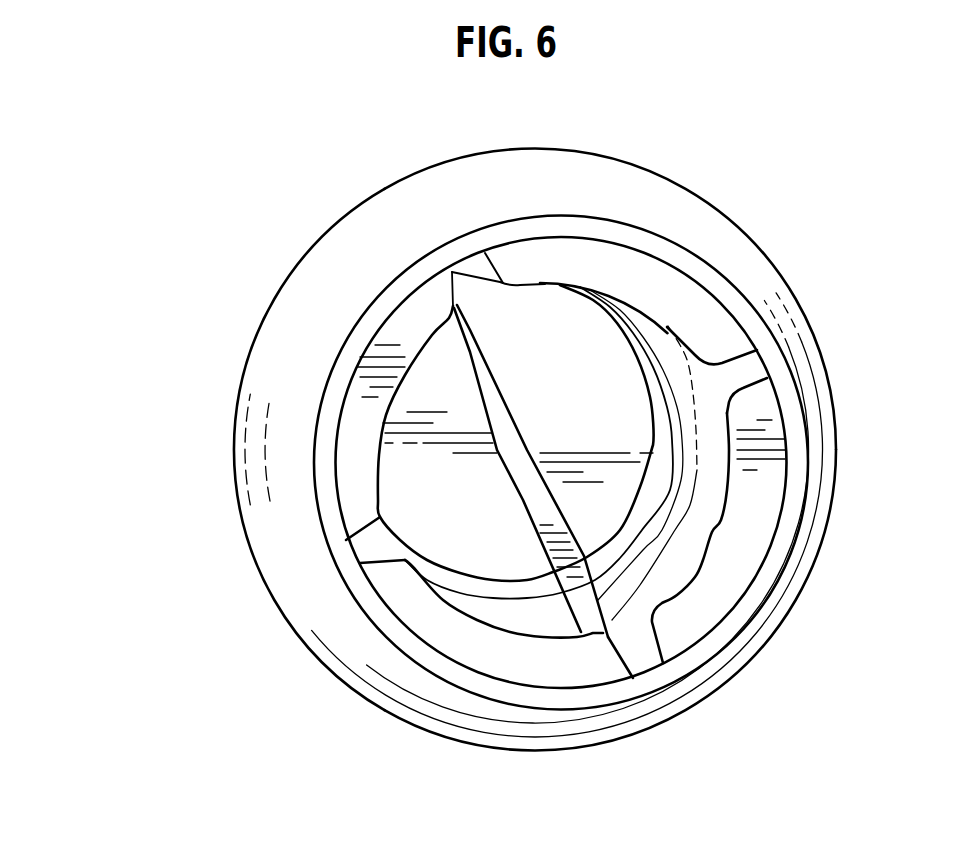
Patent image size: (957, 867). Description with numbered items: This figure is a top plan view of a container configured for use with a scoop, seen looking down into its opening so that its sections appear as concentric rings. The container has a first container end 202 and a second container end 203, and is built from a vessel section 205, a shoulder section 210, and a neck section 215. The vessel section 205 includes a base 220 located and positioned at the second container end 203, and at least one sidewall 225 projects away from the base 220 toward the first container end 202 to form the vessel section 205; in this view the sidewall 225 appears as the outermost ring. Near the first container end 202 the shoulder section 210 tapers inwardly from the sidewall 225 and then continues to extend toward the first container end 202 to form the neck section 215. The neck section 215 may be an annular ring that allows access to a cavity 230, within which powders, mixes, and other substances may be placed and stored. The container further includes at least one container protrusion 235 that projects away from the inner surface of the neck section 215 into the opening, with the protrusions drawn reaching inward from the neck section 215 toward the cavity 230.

The first container end 202 is at (792, 505).
The second container end 203 is at (788, 610).
The vessel section 205 is at (763, 252).
The shoulder section 210 is at (798, 347).
The neck section 215 is at (798, 448).
The base 220 is at (435, 387).
The sidewall 225 is at (232, 437).
The cavity 230 is at (577, 347).
The container protrusion 235 is at (417, 613).